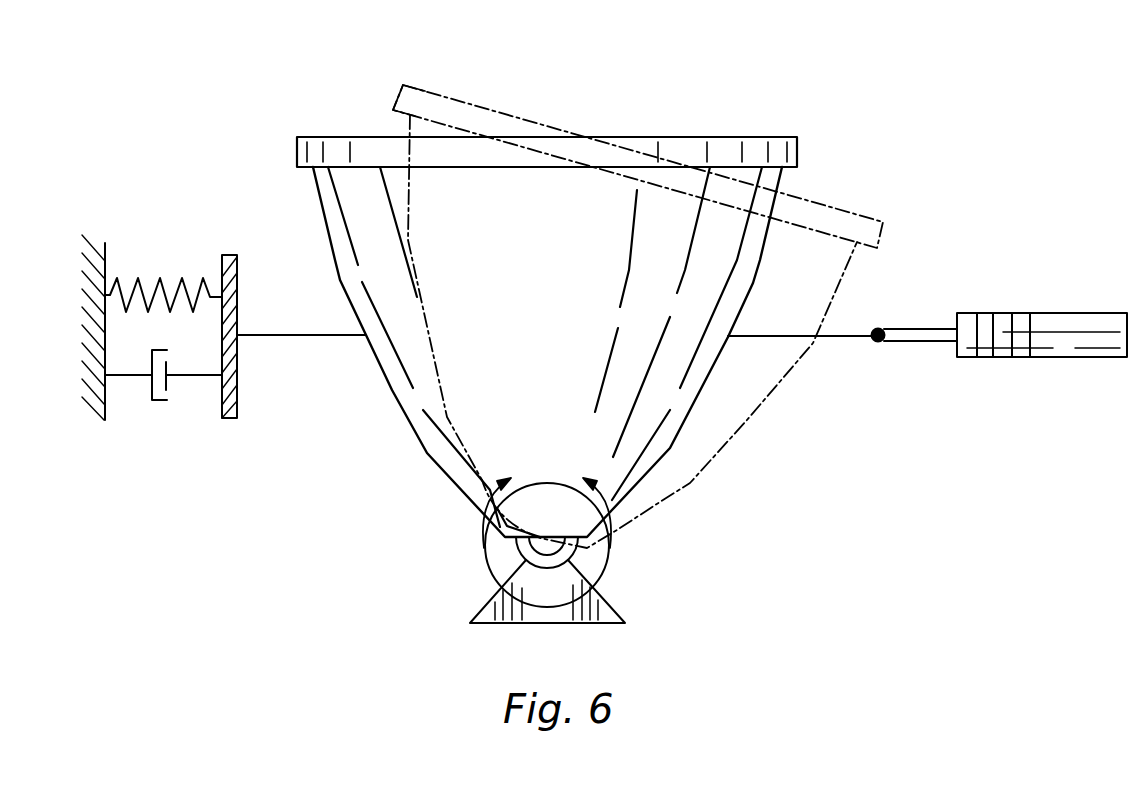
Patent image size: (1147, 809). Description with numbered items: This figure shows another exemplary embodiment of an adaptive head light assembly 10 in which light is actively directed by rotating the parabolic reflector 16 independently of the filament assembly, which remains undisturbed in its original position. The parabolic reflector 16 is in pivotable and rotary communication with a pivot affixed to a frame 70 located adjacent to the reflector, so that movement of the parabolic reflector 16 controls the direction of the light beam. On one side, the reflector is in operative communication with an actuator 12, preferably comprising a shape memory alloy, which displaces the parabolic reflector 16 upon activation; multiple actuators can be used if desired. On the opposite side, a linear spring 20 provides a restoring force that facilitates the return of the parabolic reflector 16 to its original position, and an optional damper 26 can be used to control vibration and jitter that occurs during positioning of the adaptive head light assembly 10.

The adaptive head light assembly 10 is at (720, 108).
The actuator 12 is at (1060, 316).
The parabolic reflector 16 is at (390, 392).
The linear spring 20 is at (176, 280).
The damper 26 is at (150, 392).
The frame 70 is at (614, 610).